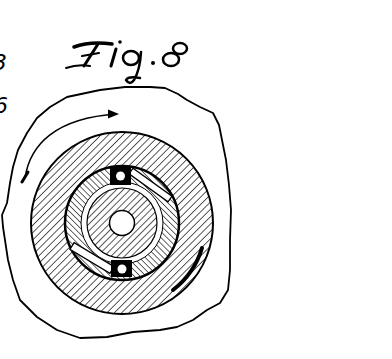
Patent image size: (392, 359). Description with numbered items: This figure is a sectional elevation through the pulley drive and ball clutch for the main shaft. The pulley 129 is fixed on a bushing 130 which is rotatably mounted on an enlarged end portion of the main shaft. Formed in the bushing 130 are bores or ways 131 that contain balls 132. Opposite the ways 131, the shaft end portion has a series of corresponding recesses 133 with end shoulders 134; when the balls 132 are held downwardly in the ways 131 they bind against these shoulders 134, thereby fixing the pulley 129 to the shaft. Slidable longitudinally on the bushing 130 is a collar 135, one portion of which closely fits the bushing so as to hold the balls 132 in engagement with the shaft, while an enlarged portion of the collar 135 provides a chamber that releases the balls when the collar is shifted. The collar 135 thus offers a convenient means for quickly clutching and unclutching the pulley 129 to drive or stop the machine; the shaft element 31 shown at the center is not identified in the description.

The housing 129 is at (186, 320).
The outer bearing ring 130 is at (140, 165).
The upper key strip 131 is at (142, 164).
The upper key 132 is at (117, 166).
The lower key 133 is at (74, 244).
The lower key strip 134 is at (79, 276).
The inner ring 135 is at (176, 186).
The shaft hub 31 is at (106, 262).